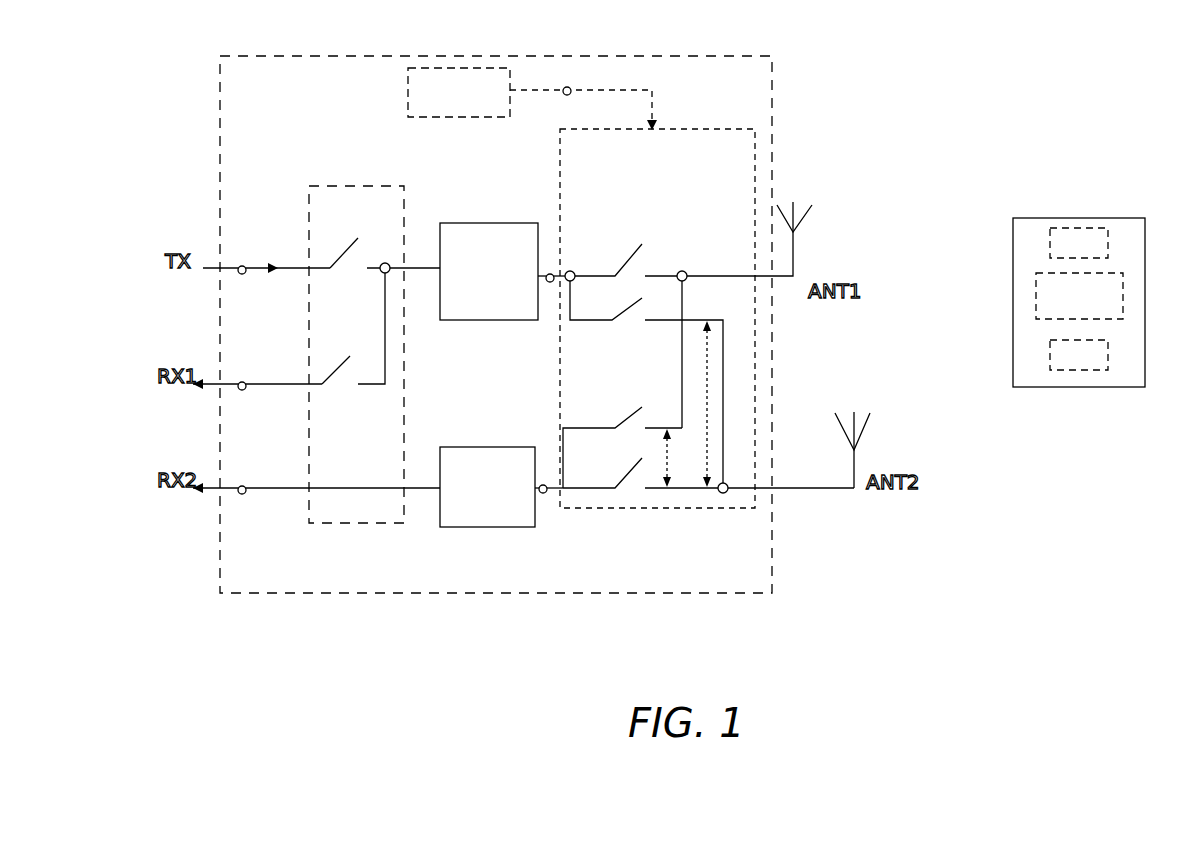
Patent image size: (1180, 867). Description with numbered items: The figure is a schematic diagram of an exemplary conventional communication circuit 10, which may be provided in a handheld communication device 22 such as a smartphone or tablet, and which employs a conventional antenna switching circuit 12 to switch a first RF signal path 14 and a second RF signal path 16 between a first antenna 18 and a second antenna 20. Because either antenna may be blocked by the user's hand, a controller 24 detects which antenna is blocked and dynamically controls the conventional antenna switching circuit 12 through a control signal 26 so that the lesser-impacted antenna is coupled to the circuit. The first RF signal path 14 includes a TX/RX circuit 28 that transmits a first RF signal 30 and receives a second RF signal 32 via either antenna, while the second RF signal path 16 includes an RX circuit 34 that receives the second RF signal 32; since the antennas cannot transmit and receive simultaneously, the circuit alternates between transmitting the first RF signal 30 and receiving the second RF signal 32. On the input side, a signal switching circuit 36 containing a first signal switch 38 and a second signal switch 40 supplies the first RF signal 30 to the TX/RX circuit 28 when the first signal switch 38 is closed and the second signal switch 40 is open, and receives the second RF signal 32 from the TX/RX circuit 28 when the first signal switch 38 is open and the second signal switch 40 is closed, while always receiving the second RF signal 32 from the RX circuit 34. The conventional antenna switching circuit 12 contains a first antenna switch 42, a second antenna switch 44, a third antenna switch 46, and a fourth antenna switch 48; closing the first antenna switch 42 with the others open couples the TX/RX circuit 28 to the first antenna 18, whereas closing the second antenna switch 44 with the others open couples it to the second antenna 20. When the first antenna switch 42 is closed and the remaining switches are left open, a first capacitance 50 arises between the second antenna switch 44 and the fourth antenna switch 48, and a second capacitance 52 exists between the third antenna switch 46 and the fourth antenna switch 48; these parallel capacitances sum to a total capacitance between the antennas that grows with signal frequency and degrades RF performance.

The conventional communication circuit 10 is at (350, 56).
The conventional antenna switching circuit 12 is at (718, 129).
The first RF signal path 14 is at (476, 223).
The second RF signal path 16 is at (470, 447).
The first antenna 18 is at (800, 222).
The second antenna 20 is at (862, 433).
The handheld communication device 22 is at (1120, 218).
The controller 24 is at (408, 93).
The control signal 26 is at (569, 88).
The TX/RX circuit 28 is at (491, 320).
The first RF signal 30 is at (242, 266).
The second RF signal 32 is at (242, 382).
The RX circuit 34 is at (472, 527).
The signal switching circuit 36 is at (327, 186).
The first signal switch 38 is at (340, 273).
The second signal switch 40 is at (335, 389).
The first antenna switch 42 is at (626, 250).
The second antenna switch 44 is at (626, 302).
The third antenna switch 46 is at (622, 438).
The fourth antenna switch 48 is at (628, 472).
The first capacitance 50 is at (708, 432).
The second capacitance 52 is at (668, 458).